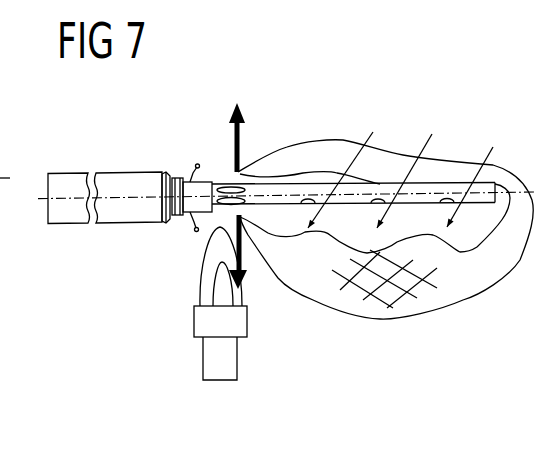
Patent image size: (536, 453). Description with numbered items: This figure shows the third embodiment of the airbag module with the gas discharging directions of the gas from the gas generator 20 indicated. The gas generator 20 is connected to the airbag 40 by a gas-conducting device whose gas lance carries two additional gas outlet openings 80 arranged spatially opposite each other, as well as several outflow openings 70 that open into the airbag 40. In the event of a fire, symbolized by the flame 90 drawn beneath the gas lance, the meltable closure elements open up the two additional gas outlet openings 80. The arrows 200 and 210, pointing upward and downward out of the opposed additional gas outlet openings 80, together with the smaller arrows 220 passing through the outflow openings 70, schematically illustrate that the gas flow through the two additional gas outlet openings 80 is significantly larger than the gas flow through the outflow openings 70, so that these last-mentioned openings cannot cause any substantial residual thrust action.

The gas generator 20 is at (73, 212).
The airbag 40 is at (428, 317).
The outflow openings 70 is at (310, 200).
The additional gas outlet openings 80 is at (229, 185).
The flame 90 is at (247, 327).
The arrow 200 is at (240, 140).
The arrow 210 is at (242, 218).
The arrows 220 is at (415, 165).